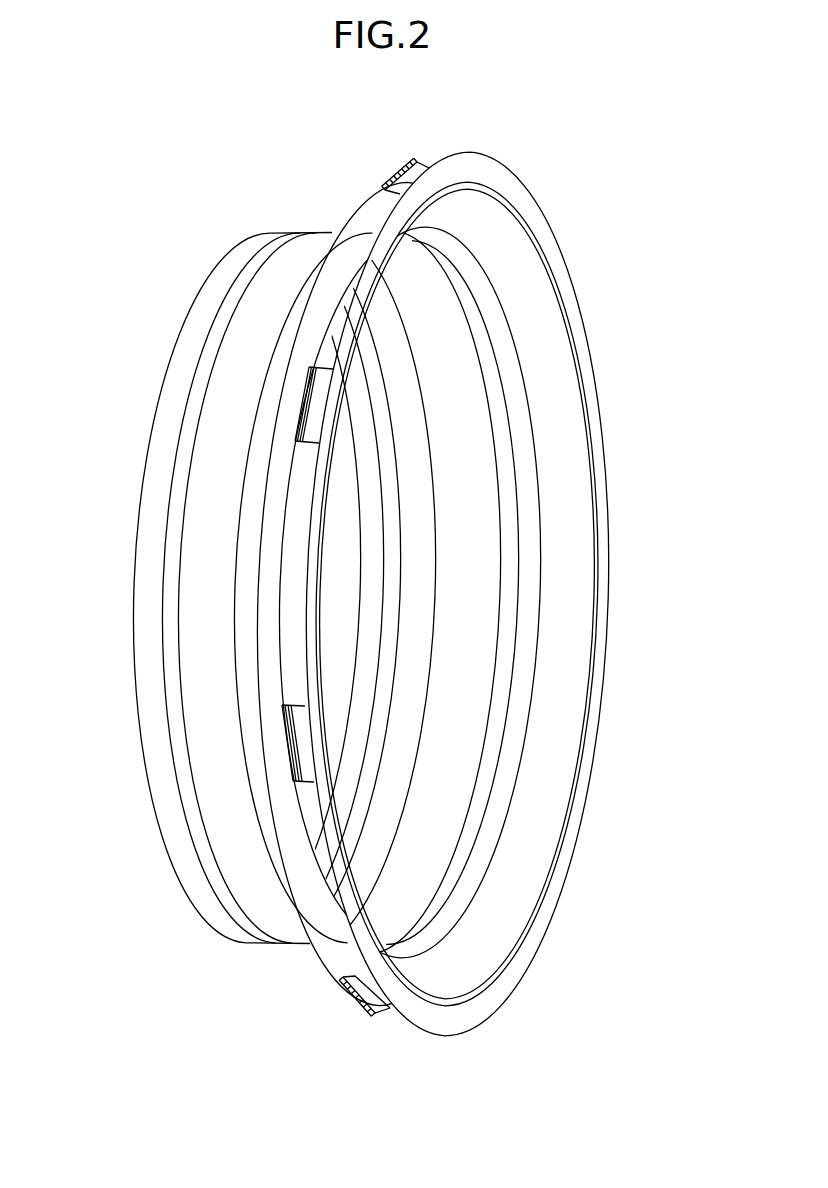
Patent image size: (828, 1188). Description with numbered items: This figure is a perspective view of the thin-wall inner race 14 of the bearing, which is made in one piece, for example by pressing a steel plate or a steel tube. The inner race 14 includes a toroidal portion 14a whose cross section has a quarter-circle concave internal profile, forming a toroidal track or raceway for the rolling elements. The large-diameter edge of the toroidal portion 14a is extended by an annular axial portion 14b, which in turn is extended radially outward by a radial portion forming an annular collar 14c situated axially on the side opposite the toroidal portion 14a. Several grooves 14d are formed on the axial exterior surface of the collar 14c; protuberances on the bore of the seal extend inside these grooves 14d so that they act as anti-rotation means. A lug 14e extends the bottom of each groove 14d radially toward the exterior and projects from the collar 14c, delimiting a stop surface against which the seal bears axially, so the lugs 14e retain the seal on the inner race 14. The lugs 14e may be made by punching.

The inner race 14 is at (603, 334).
The toroidal portion 14a is at (204, 692).
The annular axial portion 14b is at (314, 295).
The annular collar 14c is at (281, 572).
The groove 14d is at (418, 162).
The lug 14e is at (396, 174).